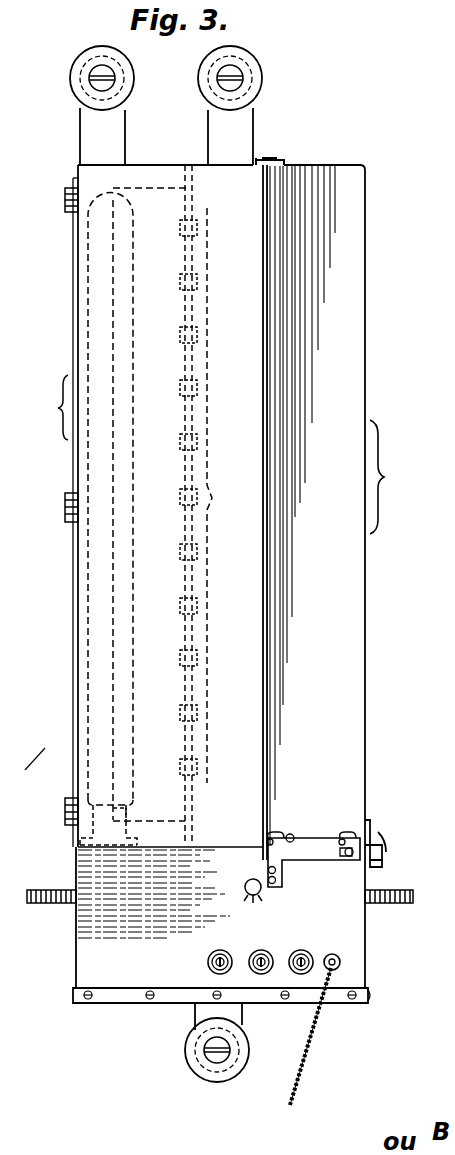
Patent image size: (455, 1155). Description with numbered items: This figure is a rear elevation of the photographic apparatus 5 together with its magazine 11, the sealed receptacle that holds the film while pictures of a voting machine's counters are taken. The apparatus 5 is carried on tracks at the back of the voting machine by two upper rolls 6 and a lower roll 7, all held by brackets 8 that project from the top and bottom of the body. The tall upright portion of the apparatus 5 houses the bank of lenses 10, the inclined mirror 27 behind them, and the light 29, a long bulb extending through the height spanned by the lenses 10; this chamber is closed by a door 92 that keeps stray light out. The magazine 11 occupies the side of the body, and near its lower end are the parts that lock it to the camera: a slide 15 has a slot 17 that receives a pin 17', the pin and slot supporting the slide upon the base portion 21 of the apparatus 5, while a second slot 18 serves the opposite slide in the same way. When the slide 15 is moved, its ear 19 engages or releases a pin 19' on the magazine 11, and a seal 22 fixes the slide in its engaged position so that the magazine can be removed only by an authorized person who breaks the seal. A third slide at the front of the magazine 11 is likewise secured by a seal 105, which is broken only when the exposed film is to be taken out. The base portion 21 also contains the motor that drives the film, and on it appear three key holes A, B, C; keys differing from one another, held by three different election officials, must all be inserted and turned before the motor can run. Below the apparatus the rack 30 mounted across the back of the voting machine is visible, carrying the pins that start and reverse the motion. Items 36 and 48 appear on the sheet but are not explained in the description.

The photographic apparatus 5 is at (55, 407).
The upper rolls 6 is at (131, 63).
The lower roll 7 is at (185, 1050).
The brackets 8 is at (115, 122).
The lenses 10 is at (212, 498).
The magazine 11 is at (387, 477).
The slide 15 is at (312, 852).
The slot 17 is at (274, 840).
The pin 17' is at (354, 872).
The slot 18 is at (341, 860).
The ear 19 is at (314, 816).
The pin 19' is at (287, 831).
The base portion 21 is at (88, 940).
The seal 22 is at (245, 887).
The inclined mirror 27 is at (112, 462).
The light 29 is at (88, 650).
The rack 30 is at (52, 890).
The wall 36 is at (446, 907).
The support 48 is at (443, 987).
The door 92 is at (73, 303).
The seal 105 is at (388, 855).
The key hole A is at (301, 952).
The key hole B is at (261, 952).
The key hole C is at (220, 952).